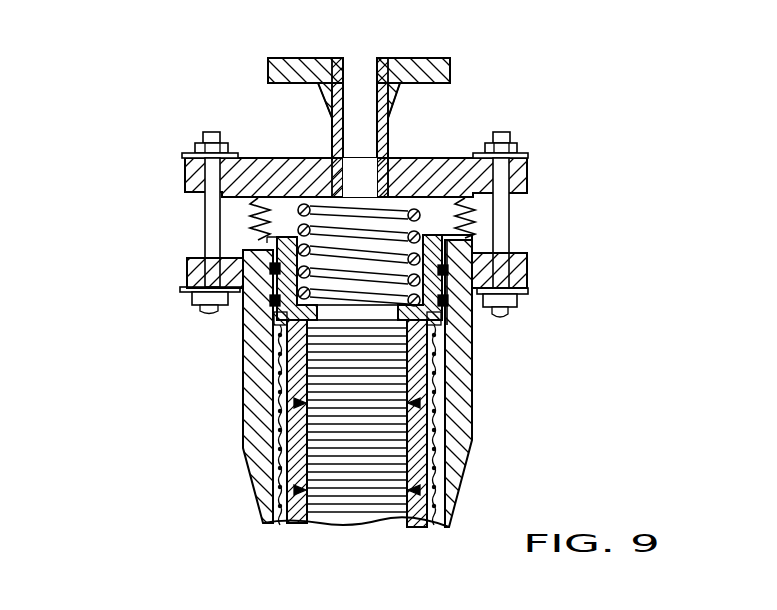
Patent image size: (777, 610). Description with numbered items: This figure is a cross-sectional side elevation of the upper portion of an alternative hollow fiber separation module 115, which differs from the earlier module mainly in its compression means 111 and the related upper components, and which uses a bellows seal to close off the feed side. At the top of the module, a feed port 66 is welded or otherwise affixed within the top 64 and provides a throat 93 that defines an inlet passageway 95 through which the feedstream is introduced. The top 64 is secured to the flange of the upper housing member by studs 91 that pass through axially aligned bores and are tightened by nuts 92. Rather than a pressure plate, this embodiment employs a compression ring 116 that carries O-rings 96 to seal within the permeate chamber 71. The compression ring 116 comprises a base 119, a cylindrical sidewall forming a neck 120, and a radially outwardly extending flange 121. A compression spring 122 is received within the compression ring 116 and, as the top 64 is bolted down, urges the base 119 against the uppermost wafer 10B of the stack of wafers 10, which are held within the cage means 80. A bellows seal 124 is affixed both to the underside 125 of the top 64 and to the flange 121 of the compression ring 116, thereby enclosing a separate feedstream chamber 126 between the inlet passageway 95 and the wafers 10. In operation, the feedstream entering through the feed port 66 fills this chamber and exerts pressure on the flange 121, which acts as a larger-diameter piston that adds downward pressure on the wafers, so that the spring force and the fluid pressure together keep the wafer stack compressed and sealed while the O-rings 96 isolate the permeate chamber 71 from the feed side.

The feed port 66 is at (452, 75).
The inlet passageway 95 is at (360, 80).
The throat 93 is at (383, 131).
The top 64 is at (522, 178).
The feedstream chamber 126 is at (420, 180).
The nuts 92 is at (196, 152).
The studs 91 is at (206, 198).
The neck 120 is at (473, 290).
The compression means 111 is at (548, 204).
The underside of top 125 is at (274, 205).
The bellows seal 124 is at (467, 213).
The compression spring 122 is at (326, 258).
The compression ring 116 is at (268, 262).
The O-rings 96 is at (270, 268).
The flange 121 is at (445, 238).
The permeate chamber 71 is at (270, 340).
The base 119 is at (281, 314).
The cage means 80 is at (278, 525).
The uppermost wafer 10B is at (422, 392).
The module 115 is at (165, 482).
The wafers 10 is at (412, 538).